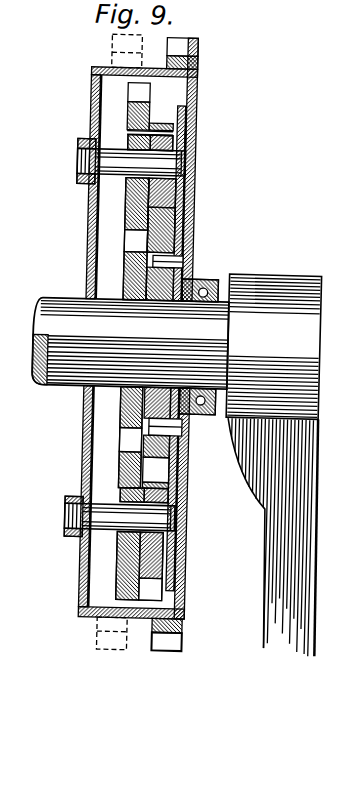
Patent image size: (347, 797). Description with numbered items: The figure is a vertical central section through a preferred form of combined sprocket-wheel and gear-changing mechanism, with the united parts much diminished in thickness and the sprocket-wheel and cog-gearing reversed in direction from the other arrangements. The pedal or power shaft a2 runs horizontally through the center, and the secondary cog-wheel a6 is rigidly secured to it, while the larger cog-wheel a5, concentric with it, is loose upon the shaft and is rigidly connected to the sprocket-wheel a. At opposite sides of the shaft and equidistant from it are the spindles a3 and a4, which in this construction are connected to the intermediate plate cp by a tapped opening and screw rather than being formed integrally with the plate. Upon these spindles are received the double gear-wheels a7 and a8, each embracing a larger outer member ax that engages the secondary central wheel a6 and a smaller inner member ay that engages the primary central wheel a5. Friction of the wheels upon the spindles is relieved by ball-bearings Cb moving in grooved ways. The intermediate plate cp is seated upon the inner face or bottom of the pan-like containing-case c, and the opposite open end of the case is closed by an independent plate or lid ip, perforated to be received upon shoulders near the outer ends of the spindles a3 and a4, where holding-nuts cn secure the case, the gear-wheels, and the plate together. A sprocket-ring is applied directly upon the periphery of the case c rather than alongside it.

The sprocket-wheel a is at (185, 68).
The larger outer member ax is at (119, 108).
The containing-case c is at (191, 90).
The intermediate plate cp is at (190, 118).
The smaller inner member ay is at (192, 140).
The double gear-wheel a7 is at (137, 134).
The spindle a3 is at (131, 162).
The holding-nut cn is at (73, 180).
The independent plate or lid ip is at (85, 222).
The larger cog-wheel a5 is at (177, 225).
The secondary cog-wheel a6 is at (121, 270).
The ball-bearings Cb is at (200, 288).
The pedal or power shaft a2 is at (174, 462).
The double gear-wheel a8 is at (136, 493).
The spindle a4 is at (119, 517).